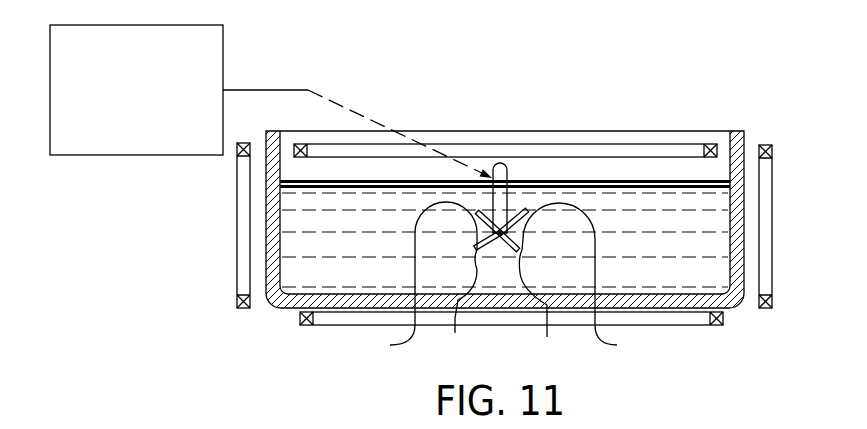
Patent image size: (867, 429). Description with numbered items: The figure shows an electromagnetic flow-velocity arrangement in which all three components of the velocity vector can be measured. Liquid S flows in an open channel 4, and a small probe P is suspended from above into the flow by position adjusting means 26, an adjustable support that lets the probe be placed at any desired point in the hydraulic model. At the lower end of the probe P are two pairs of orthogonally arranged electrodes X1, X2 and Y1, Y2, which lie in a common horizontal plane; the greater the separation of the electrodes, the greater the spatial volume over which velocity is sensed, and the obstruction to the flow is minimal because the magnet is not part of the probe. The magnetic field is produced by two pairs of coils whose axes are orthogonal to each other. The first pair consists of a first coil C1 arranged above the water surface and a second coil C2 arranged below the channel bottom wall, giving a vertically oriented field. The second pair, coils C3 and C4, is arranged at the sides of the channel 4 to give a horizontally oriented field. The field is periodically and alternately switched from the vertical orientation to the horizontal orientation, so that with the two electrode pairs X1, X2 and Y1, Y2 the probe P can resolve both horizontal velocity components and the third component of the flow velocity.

The position adjusting means 26 is at (120, 157).
The open channel 4 is at (743, 138).
The liquid solution S is at (713, 272).
The first magnet coil C1 is at (380, 143).
The second magnet coil C2 is at (723, 317).
The third magnet coil C3 is at (237, 279).
The fourth magnet coil C4 is at (773, 157).
The probe P is at (502, 163).
The electrode X1 is at (462, 302).
The electrode Y2 is at (415, 282).
The electrode X2 is at (585, 287).
The electrode Y1 is at (541, 309).